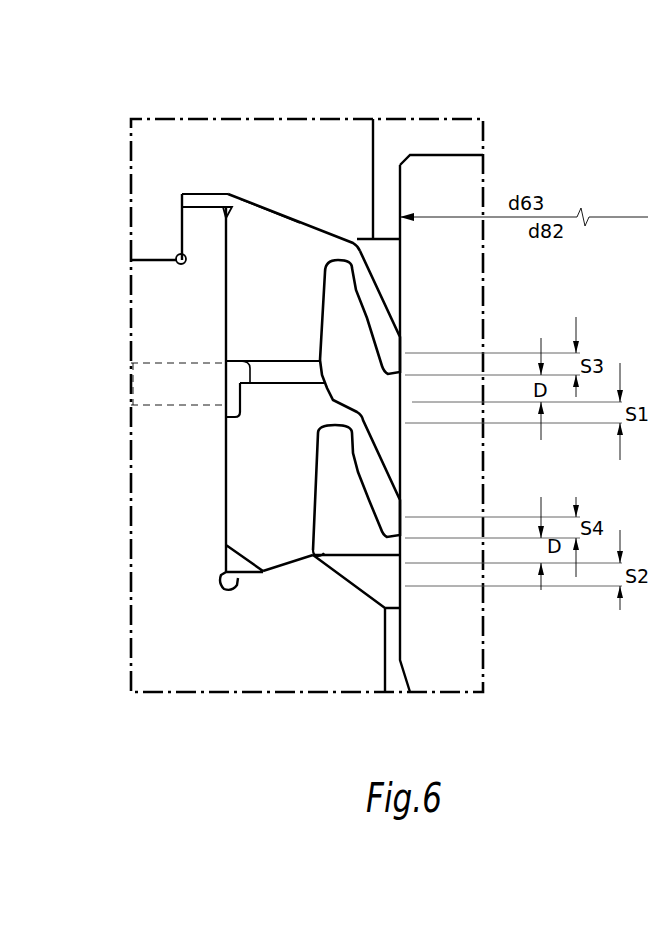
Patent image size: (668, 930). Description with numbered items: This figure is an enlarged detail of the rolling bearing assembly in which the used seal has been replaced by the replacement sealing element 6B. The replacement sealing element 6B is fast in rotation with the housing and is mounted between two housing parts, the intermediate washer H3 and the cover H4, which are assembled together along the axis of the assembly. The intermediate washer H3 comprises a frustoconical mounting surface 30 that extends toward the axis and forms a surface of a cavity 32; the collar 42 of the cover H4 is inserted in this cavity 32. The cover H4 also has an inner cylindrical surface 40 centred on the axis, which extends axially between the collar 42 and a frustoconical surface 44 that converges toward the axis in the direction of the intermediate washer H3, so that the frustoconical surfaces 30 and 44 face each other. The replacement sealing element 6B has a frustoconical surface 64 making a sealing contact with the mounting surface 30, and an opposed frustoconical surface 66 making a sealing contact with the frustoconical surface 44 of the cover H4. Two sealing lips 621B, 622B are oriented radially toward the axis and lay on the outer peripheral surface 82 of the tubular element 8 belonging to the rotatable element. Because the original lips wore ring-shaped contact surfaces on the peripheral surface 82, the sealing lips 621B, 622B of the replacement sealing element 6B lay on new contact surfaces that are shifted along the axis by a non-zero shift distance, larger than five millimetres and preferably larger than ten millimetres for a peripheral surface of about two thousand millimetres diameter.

The mounting surface 30 is at (314, 229).
The cavity 32 is at (252, 247).
The inner cylindrical surface 40 is at (243, 462).
The collar 42 is at (210, 211).
The frustoconical surface 44 is at (286, 568).
The frustoconical surface 64 is at (267, 207).
The frustoconical surface 66 is at (304, 540).
The sealing lip 621B is at (400, 300).
The sealing lip 622B is at (400, 497).
The tubular element 8 is at (473, 177).
The outer peripheral surface 82 is at (398, 640).
The intermediate washer H3 is at (316, 137).
The cover H4 is at (180, 650).
The replacement sealing element 6B is at (205, 264).